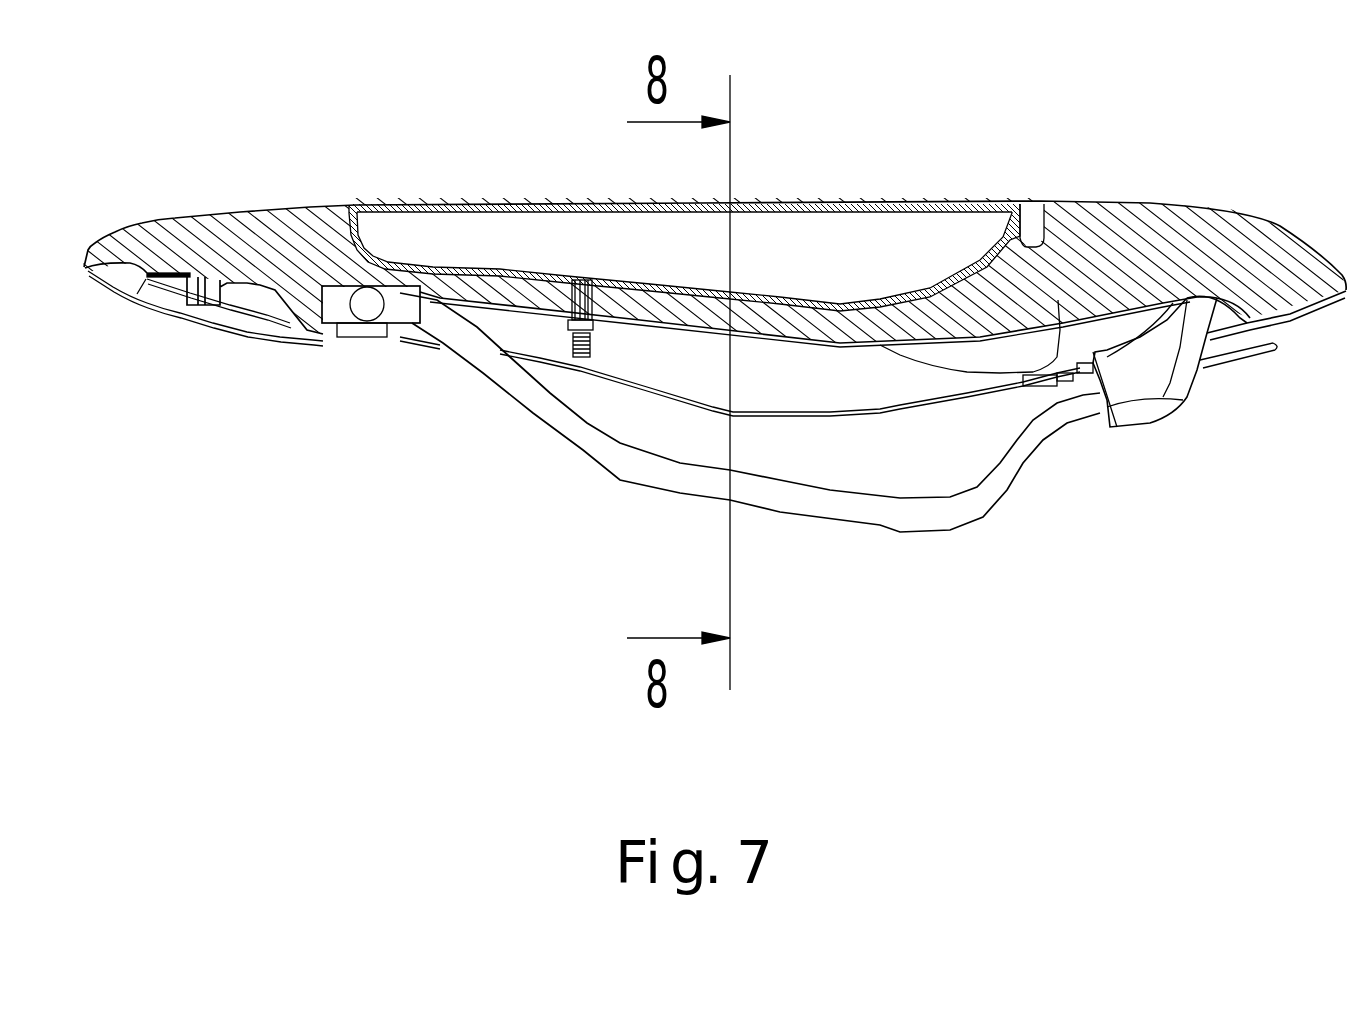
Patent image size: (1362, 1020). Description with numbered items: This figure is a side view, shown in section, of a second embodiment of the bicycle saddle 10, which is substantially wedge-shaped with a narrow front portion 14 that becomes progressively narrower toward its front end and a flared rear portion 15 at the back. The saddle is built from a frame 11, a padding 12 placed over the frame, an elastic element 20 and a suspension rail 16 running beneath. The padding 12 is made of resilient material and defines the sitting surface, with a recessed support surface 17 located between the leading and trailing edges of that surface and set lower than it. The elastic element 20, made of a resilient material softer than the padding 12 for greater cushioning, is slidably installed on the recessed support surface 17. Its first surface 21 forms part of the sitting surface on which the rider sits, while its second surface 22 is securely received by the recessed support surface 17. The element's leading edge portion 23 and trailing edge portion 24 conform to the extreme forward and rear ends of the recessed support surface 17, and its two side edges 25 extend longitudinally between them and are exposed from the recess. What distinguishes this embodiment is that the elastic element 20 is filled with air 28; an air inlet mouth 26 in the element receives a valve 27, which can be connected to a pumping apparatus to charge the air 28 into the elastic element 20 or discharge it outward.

The bicycle saddle 10 is at (1223, 180).
The frame 11 is at (253, 297).
The padding 12 is at (262, 237).
The narrow front portion 14 is at (175, 218).
The flared rear portion 15 is at (1128, 202).
The suspension rail 16 is at (932, 512).
The recessed support surface 17 is at (666, 370).
The elastic element 20 is at (796, 178).
The first surface 21 is at (452, 205).
The second surface 22 is at (772, 296).
The leading edge portion 23 is at (366, 247).
The trailing edge portion 24 is at (1042, 225).
The side edges 25 is at (557, 235).
The air inlet mouth 26 is at (568, 303).
The valve 27 is at (582, 357).
The air 28 is at (929, 235).